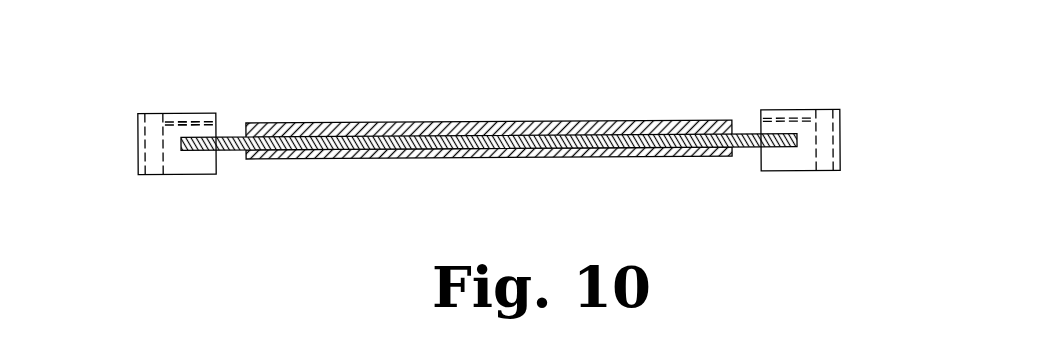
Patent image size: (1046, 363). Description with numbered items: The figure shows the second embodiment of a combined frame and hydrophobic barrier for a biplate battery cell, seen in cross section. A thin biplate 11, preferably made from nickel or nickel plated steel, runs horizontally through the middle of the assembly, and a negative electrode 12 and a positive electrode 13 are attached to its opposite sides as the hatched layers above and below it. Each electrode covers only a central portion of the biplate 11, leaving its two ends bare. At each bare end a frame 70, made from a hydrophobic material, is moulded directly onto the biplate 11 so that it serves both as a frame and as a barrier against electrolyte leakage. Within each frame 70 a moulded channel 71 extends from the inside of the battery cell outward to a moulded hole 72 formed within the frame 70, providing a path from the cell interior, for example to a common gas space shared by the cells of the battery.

The biplate 11 is at (437, 127).
The negative electrode 12 is at (535, 120).
The positive electrode 13 is at (563, 162).
The frame 70 is at (137, 107).
The moulded channel 71 is at (197, 120).
The moulded hole 72 is at (153, 132).